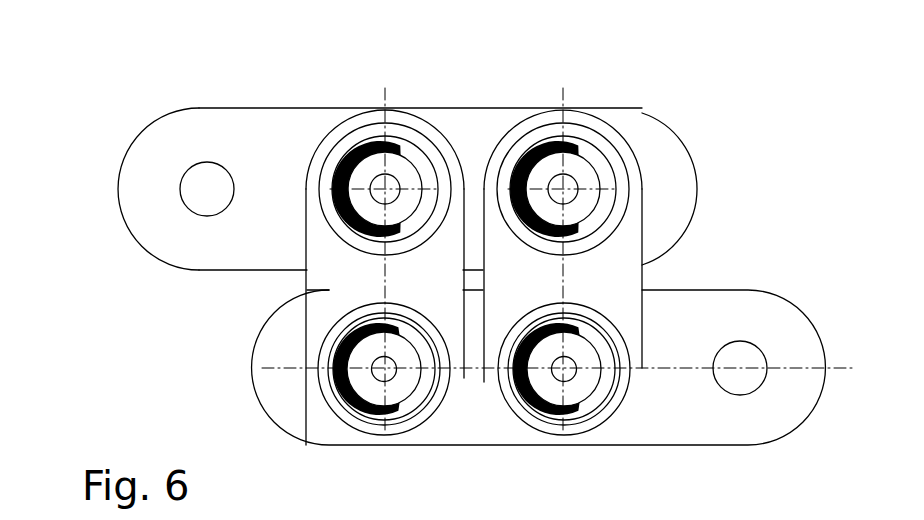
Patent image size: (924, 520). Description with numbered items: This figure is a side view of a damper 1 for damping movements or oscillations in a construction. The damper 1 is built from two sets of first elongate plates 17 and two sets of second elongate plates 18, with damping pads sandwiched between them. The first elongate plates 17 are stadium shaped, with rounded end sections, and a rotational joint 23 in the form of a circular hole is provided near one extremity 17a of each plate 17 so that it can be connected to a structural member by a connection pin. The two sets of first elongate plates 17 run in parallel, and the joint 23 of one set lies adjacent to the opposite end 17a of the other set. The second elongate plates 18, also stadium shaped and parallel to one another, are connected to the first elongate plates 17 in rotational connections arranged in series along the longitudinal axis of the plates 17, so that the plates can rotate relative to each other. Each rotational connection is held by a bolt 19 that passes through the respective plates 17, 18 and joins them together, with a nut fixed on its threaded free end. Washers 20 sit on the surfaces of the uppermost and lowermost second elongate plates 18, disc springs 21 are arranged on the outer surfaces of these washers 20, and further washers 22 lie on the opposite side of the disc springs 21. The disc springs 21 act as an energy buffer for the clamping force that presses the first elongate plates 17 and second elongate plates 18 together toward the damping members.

The damper 1 is at (782, 174).
The first elongate plates 17 is at (484, 113).
The extremity of the first elongate plates 17a is at (672, 150).
The second elongate plates 18 is at (421, 115).
The bolt 19 is at (600, 514).
The washers 20 is at (378, 128).
The disc springs 21 is at (368, 140).
The washers 22 is at (493, 411).
The rotational joint 23 is at (188, 170).